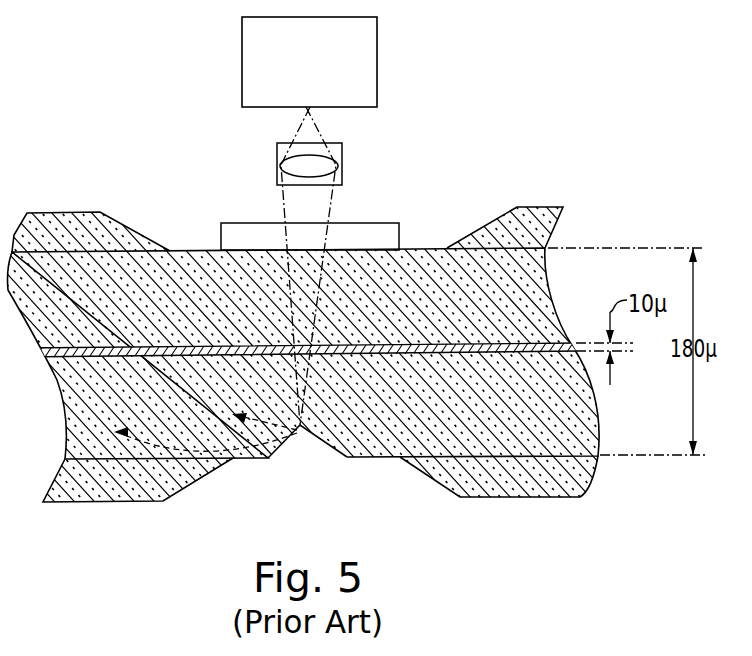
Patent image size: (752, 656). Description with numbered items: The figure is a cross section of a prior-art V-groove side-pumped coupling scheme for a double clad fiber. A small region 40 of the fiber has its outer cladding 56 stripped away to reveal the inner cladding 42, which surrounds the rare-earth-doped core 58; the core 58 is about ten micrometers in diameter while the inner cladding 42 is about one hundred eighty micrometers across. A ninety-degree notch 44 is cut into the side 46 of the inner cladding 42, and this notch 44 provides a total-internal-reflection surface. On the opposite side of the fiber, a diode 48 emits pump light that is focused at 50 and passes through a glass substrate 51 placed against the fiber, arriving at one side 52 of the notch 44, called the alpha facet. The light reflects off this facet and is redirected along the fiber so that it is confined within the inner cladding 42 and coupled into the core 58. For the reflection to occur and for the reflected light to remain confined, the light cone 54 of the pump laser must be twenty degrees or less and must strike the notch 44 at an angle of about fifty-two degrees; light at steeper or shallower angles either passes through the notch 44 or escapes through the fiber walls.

The small region of the double clad fiber 40 is at (301, 470).
The inner cladding 42 is at (560, 312).
The notch 44 is at (284, 448).
The side of the inner cladding 46 is at (398, 455).
The diode 48 is at (377, 70).
The focus 50 is at (342, 155).
The glass substrate 51 is at (400, 226).
The side of the notch (alpha facet) 52 is at (298, 434).
The light cone 54 is at (283, 212).
The outer cladding 56 is at (125, 226).
The core 58 is at (466, 345).